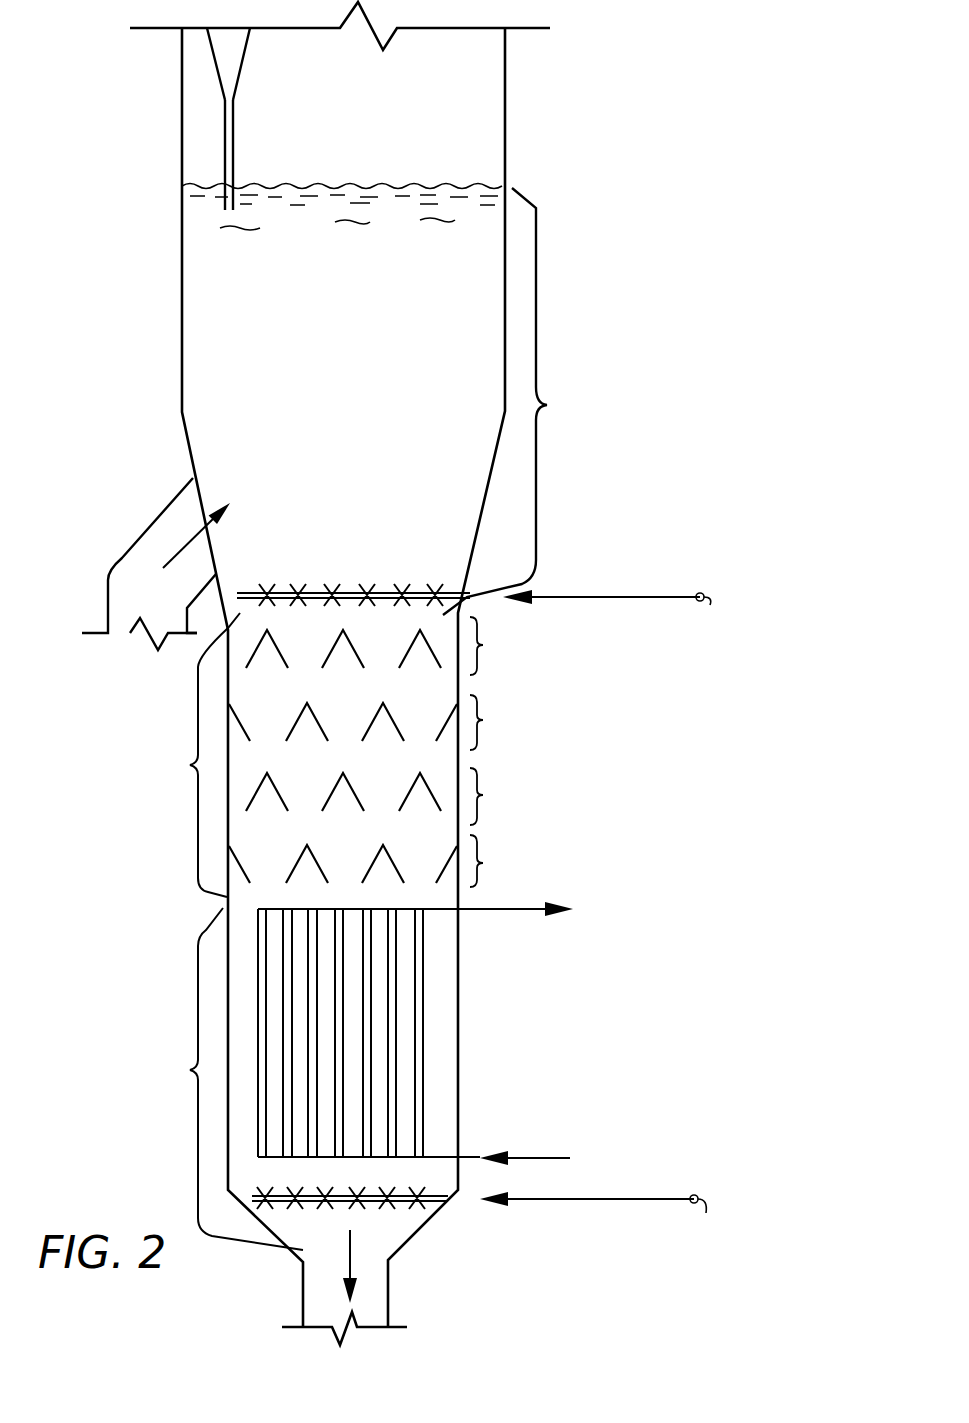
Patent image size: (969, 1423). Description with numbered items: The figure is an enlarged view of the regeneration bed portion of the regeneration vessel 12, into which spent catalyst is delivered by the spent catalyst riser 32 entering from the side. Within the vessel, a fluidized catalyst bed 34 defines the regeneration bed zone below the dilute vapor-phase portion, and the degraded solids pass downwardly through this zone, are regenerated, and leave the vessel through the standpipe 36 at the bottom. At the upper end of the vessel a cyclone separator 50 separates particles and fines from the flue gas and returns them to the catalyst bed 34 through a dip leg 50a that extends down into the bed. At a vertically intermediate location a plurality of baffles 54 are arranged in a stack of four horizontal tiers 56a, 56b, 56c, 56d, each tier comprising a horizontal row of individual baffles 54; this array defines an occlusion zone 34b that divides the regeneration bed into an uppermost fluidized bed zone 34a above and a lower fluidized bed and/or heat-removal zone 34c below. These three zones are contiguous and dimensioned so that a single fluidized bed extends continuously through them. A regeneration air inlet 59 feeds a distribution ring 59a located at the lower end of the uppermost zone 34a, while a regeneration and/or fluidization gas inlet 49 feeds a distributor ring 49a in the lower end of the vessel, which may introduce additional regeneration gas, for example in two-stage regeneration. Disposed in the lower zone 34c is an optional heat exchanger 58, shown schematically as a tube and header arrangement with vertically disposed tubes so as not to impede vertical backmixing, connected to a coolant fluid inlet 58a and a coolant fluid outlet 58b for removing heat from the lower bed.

The regeneration vessel 12 is at (172, 303).
The spent catalyst riser 32 is at (140, 557).
The fluidized catalyst bed 34 is at (376, 476).
The uppermost fluidized bed zone 34a is at (550, 405).
The occlusion zone 34b is at (178, 765).
The lower fluidized bed and/or heat-removal zone 34c is at (178, 1070).
The standpipe 36 is at (382, 1286).
The regeneration and/or fluidization gas inlet 49 is at (530, 1203).
The distributor ring 49a is at (308, 1208).
The cyclone separator 50 is at (240, 50).
The dip leg 50a is at (233, 146).
The baffles 54 is at (328, 648).
The first tier of baffles 56a is at (498, 645).
The second tier of baffles 56b is at (498, 720).
The third tier of baffles 56c is at (498, 795).
The fourth tier of baffles 56d is at (498, 863).
The heat exchanger 58 is at (385, 1046).
The coolant fluid inlet 58a is at (535, 1158).
The coolant fluid outlet 58b is at (510, 909).
The regeneration air inlet 59 is at (612, 595).
The distribution ring 59a is at (386, 590).